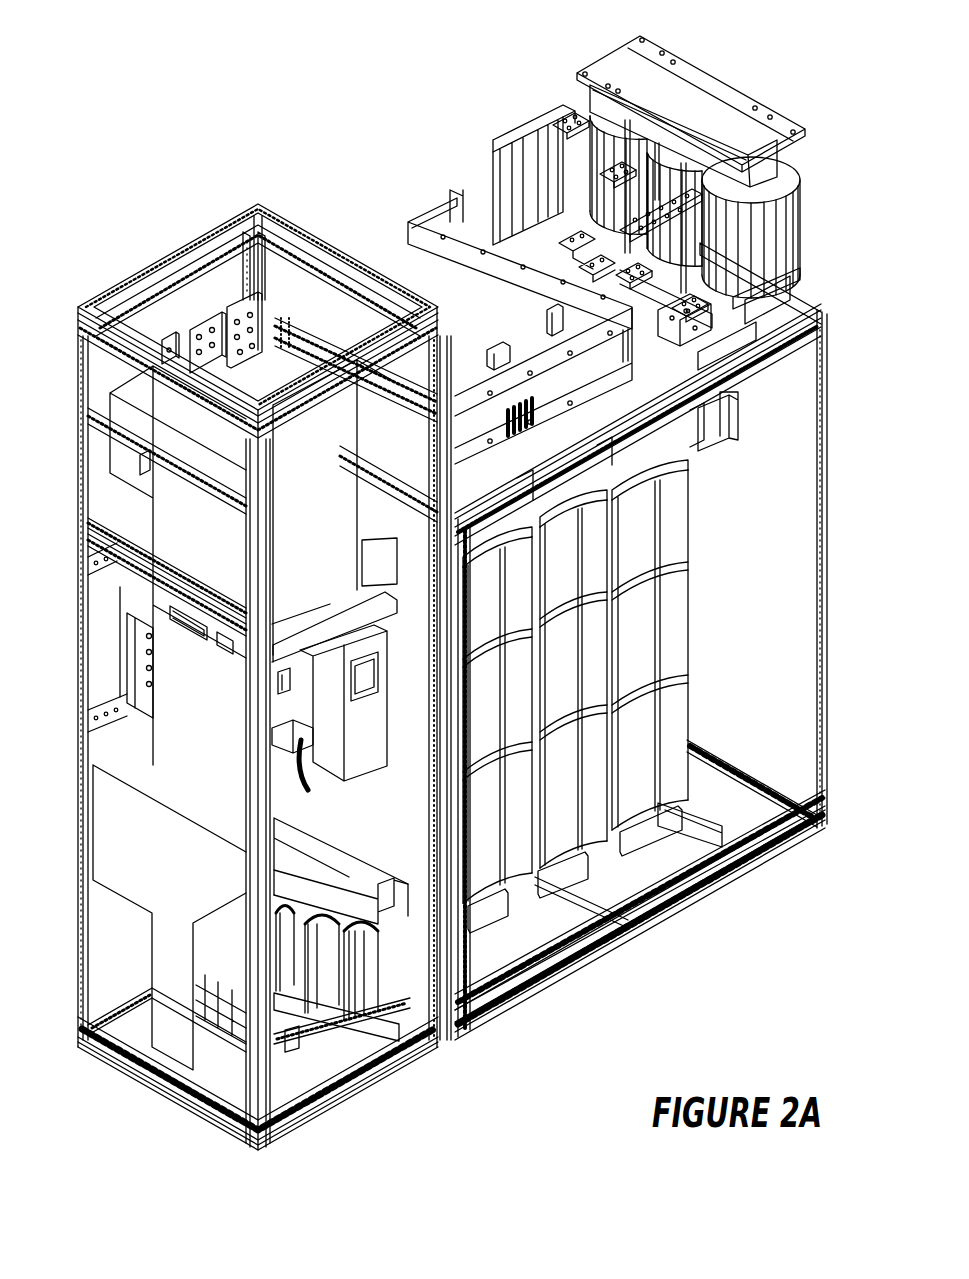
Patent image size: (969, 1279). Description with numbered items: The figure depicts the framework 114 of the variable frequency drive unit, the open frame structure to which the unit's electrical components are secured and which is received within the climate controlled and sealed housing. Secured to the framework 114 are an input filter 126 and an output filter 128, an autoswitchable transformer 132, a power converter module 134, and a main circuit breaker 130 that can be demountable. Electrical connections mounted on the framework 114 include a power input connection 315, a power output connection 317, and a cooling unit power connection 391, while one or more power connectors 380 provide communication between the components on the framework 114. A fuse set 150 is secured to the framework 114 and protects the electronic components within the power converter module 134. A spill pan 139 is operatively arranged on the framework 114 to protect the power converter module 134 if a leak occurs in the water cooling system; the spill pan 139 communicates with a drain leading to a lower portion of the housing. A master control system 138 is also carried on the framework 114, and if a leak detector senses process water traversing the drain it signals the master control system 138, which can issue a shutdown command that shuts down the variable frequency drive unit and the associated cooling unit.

The framework 114 is at (201, 97).
The input filter 126 is at (637, 70).
The output filter 128 is at (408, 277).
The main circuit breaker 130 is at (167, 527).
The autoswitchable transformer 132 is at (380, 970).
The power converter module 134 is at (671, 724).
The master control system 138 is at (370, 745).
The spill pan 139 is at (698, 360).
The fuse set 150 is at (702, 435).
The power input connection 315 is at (170, 333).
The power output connection 317 is at (243, 296).
The power connectors 380 is at (143, 687).
The cooling unit power connection 391 is at (259, 354).